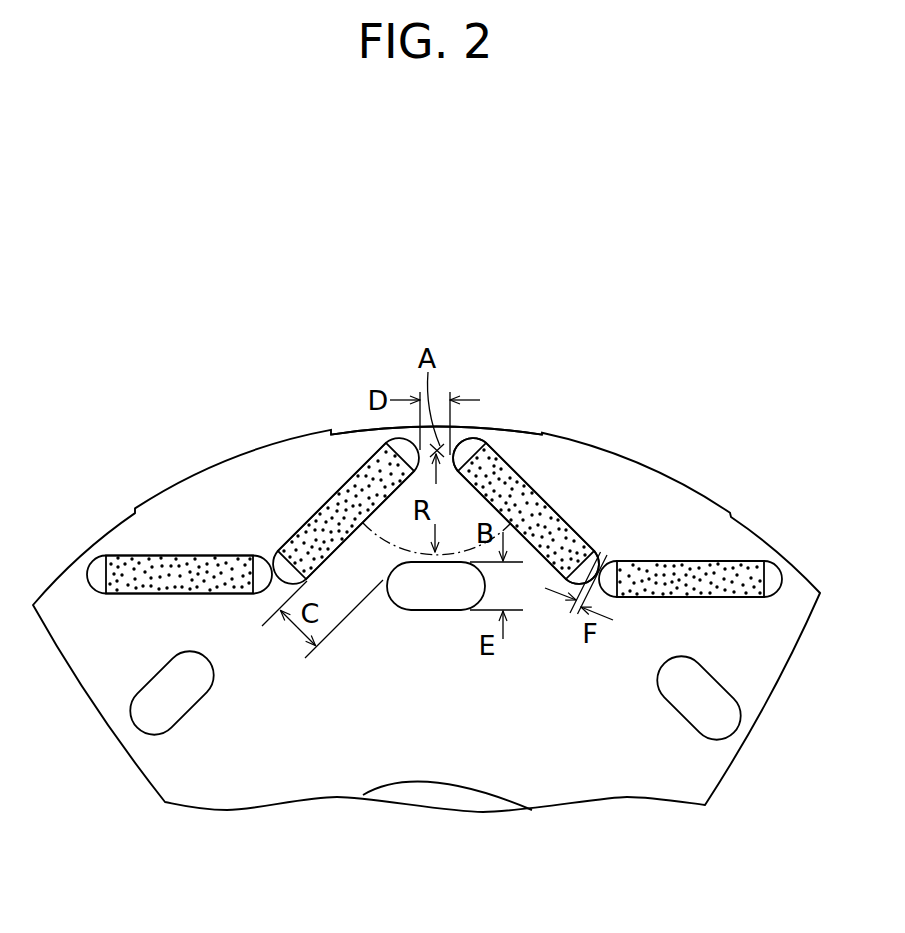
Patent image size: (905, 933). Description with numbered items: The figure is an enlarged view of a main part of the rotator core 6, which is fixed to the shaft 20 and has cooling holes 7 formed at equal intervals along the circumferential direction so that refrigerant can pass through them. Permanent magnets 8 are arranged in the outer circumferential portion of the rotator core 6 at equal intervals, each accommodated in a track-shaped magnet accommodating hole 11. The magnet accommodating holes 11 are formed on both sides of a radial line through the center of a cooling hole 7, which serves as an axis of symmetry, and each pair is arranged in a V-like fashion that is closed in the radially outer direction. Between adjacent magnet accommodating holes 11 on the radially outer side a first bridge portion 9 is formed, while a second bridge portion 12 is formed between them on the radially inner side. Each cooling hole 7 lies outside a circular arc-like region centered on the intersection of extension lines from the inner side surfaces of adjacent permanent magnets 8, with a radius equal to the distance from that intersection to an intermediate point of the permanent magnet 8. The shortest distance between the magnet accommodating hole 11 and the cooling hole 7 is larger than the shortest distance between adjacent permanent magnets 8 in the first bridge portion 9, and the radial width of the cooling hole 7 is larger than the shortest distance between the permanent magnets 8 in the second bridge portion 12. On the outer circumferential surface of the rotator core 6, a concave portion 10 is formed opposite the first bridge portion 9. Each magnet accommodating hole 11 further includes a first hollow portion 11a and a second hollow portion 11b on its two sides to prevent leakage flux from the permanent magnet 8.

The rotator core 6 is at (635, 772).
The cooling hole 7 is at (430, 595).
The permanent magnet 8 is at (507, 490).
The first bridge portion 9 is at (443, 444).
The concave portion 10 is at (353, 429).
The magnet accommodating hole 11 is at (527, 492).
The first hollow portion 11a is at (466, 453).
The second hollow portion 11b is at (568, 580).
The second bridge portion 12 is at (598, 556).
The shaft 20 is at (445, 793).